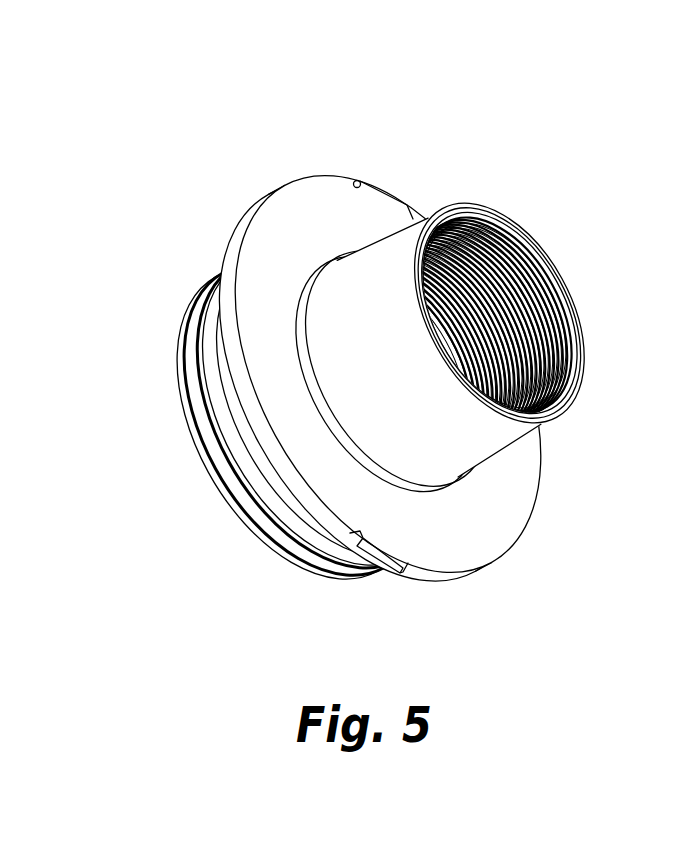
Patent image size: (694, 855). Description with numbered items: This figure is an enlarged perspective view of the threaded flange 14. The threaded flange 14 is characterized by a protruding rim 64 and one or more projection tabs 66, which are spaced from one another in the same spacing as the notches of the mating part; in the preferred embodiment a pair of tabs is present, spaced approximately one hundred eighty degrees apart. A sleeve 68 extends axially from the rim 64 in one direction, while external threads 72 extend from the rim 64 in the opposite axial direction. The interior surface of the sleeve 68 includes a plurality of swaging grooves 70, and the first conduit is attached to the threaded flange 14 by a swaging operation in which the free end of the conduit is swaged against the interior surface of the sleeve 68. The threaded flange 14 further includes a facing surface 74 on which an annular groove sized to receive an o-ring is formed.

The threaded flange 14 is at (398, 350).
The protruding rim 64 is at (316, 252).
The projection tab 66 is at (388, 200).
The sleeve 68 is at (395, 378).
The swaging grooves 70 is at (498, 318).
The external threads 72 is at (272, 543).
The facing surface 74 is at (520, 233).